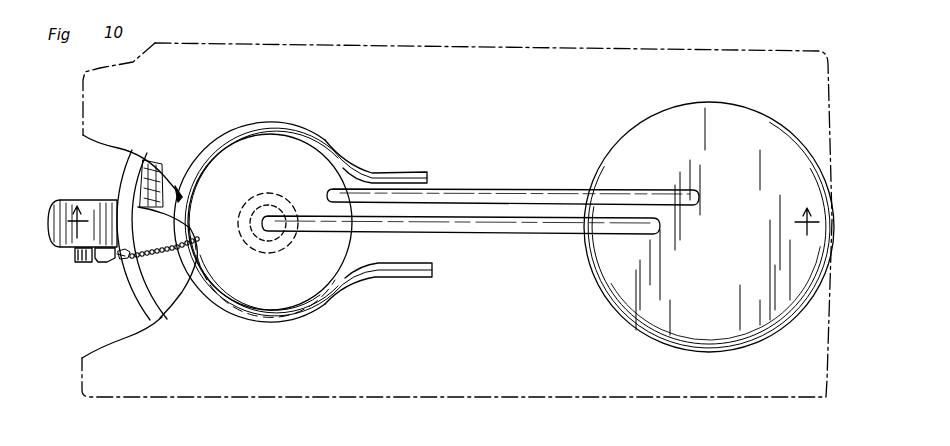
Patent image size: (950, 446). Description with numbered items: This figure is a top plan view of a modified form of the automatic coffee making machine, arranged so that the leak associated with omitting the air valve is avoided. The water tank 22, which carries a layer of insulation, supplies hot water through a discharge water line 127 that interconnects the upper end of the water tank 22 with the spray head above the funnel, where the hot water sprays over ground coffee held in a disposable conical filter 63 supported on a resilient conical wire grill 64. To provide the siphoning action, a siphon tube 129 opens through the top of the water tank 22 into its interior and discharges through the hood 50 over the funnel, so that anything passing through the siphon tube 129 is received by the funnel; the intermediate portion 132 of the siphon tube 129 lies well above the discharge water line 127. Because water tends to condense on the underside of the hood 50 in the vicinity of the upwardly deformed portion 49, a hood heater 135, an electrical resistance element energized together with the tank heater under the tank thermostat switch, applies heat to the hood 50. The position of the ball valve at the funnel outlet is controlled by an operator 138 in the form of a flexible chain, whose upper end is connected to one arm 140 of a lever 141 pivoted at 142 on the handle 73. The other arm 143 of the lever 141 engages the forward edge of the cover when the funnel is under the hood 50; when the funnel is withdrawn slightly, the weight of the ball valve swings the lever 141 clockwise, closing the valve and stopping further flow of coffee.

The water tank 22 is at (740, 112).
The upwardly deformed portion 49 is at (287, 150).
The hood 50 is at (430, 112).
The disposable conical filter 63 is at (163, 195).
The resilient conical wire grill 64 is at (138, 183).
The handle 73 is at (88, 200).
The discharge water line 127 is at (510, 229).
The siphon tube 129 is at (512, 192).
The intermediate portion 132 is at (453, 193).
The hood heater 135 is at (313, 303).
The operator 138 is at (167, 252).
The one arm 140 is at (150, 326).
The lever 141 is at (93, 258).
The pivot 142 is at (103, 263).
The other arm 143 is at (80, 260).